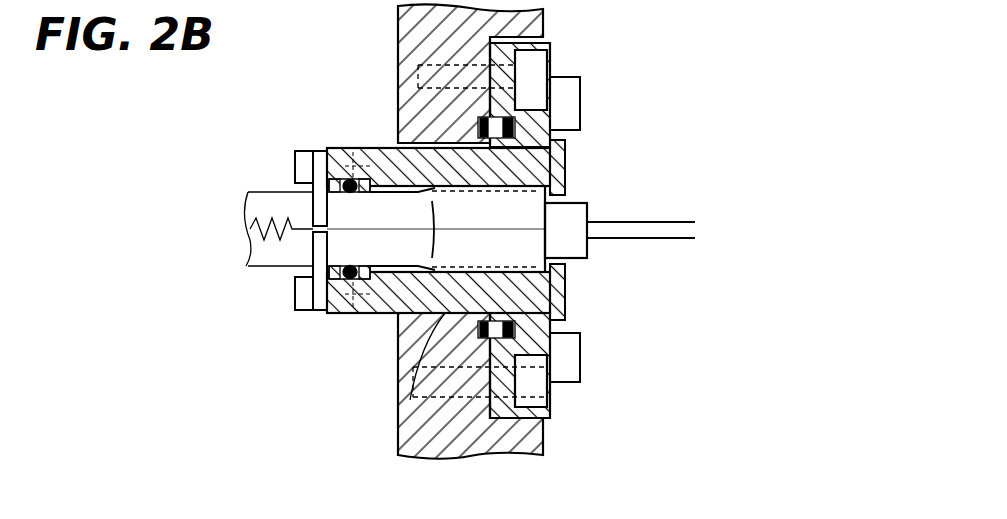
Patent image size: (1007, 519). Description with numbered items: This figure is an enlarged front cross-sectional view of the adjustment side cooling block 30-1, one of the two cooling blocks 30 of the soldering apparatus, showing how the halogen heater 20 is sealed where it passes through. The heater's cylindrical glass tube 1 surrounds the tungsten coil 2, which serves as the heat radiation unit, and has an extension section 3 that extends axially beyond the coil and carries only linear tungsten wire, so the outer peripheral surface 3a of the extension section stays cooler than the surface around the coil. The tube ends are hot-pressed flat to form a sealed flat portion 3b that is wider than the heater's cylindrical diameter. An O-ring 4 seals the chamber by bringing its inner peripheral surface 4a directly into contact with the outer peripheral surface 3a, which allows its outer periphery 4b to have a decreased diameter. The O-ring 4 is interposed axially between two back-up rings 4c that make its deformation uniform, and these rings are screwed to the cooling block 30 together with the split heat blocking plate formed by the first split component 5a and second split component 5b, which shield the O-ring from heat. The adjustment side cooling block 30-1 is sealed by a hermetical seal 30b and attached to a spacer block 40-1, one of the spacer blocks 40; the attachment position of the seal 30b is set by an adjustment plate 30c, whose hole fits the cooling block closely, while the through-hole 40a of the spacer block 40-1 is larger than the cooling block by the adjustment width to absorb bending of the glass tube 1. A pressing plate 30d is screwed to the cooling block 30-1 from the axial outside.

The glass tube 1 is at (265, 267).
The tungsten coil 2 is at (250, 240).
The extension section 3 is at (490, 221).
The outer peripheral surface 3a is at (373, 150).
The flat portion 3b is at (470, 205).
The O-ring 4 is at (327, 177).
The inner peripheral surface 4a is at (318, 190).
The outer periphery 4b is at (295, 151).
The back-up rings 4c is at (327, 283).
The first split component 5a is at (318, 151).
The second split component 5b is at (320, 252).
The halogen heater 20 is at (222, 208).
The cooling block 30 is at (529, 249).
The adjustment side cooling block 30-1 is at (500, 295).
The hermetical seal 30b is at (510, 127).
The adjustment plate 30c is at (500, 78).
The pressing plate 30d is at (557, 292).
The spacer block 40 is at (544, 249).
The spacer block 40-1 is at (510, 25).
The through-hole 40a is at (402, 410).